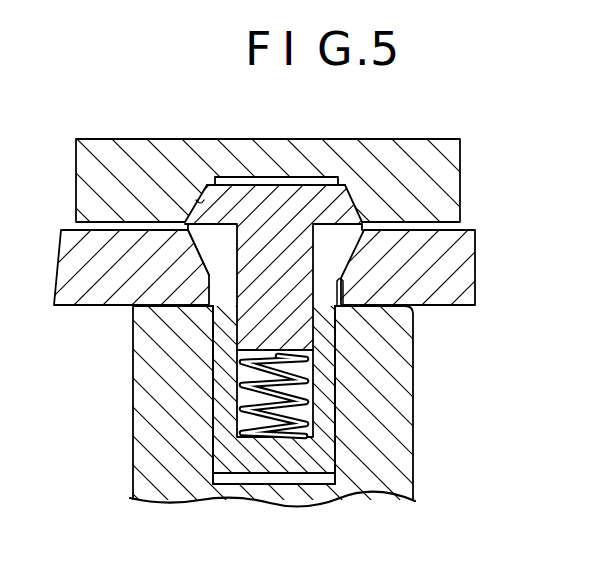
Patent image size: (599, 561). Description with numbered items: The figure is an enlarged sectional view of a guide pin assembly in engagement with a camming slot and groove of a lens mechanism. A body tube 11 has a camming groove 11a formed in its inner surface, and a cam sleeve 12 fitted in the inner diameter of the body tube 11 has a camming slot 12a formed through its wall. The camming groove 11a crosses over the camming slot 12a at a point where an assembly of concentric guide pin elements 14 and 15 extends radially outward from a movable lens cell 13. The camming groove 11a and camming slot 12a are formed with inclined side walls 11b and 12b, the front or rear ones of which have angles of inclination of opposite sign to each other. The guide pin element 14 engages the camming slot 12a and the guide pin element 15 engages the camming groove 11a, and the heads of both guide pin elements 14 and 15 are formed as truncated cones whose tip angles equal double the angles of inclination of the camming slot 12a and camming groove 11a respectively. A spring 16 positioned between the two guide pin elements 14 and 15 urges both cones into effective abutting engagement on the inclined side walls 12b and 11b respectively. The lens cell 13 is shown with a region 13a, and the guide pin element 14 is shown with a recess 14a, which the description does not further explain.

The body tube 11 is at (437, 158).
The camming groove 11a is at (288, 183).
The inclined side wall 11b is at (201, 200).
The cam sleeve 12 is at (458, 256).
The camming slot 12a is at (343, 290).
The inclined side wall 12b is at (198, 252).
The movable lens cell 13 is at (400, 430).
The bottom plate of support body bore 13a is at (313, 480).
The guide pin element 14 is at (223, 445).
The spring recess in sleeve 14a is at (238, 398).
The guide pin element 15 is at (263, 330).
The spring 16 is at (302, 396).